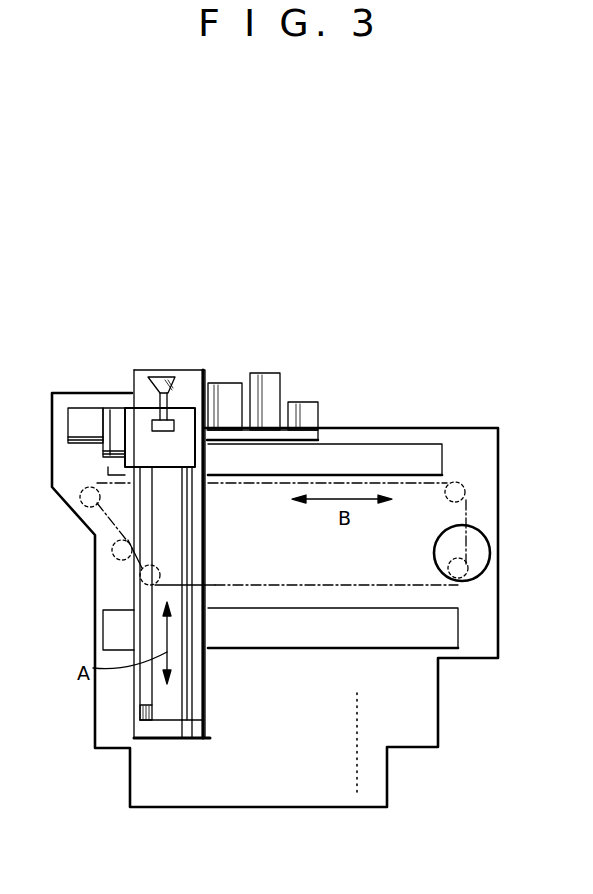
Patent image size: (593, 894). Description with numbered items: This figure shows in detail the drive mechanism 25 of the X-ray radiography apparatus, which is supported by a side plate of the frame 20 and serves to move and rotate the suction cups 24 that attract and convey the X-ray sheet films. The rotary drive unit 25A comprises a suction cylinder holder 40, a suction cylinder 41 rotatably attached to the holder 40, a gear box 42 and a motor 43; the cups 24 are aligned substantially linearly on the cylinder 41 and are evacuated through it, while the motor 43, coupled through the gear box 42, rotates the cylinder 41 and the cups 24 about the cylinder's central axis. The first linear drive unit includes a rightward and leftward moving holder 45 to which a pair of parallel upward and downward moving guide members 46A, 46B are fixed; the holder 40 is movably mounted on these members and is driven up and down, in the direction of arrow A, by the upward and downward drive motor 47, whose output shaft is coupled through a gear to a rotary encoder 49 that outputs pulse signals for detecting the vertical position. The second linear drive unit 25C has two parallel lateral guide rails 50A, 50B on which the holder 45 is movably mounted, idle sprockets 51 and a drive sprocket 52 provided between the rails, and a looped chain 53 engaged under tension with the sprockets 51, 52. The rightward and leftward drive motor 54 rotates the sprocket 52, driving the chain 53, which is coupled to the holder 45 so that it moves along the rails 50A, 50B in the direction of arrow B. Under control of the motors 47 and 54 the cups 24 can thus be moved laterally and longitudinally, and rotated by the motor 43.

The frame 20 is at (363, 808).
The cups 24 is at (163, 377).
The drive mechanism 25 is at (374, 412).
The rotary drive unit 25A is at (130, 384).
The second linear drive unit 25C is at (283, 628).
The suction cylinder holder 40 is at (124, 427).
The suction cylinder 41 is at (160, 431).
The gear box 42 is at (105, 449).
The motor 43 is at (68, 428).
The rightward and leftward moving holder 45 is at (125, 718).
The upward and downward moving guide member 46A is at (182, 738).
The upward and downward moving guide member 46B is at (150, 738).
The upward and downward drive motor 47 is at (268, 373).
The upward and downward moving position detecting rotary encoder 49 is at (305, 402).
The guide rail 50A is at (438, 460).
The guide rail 50B is at (399, 640).
The idle sprockets 51 is at (78, 507).
The drive sprocket 52 is at (468, 576).
The looped chain 53 is at (445, 476).
The rightward and leftward drive motor 54 is at (491, 553).